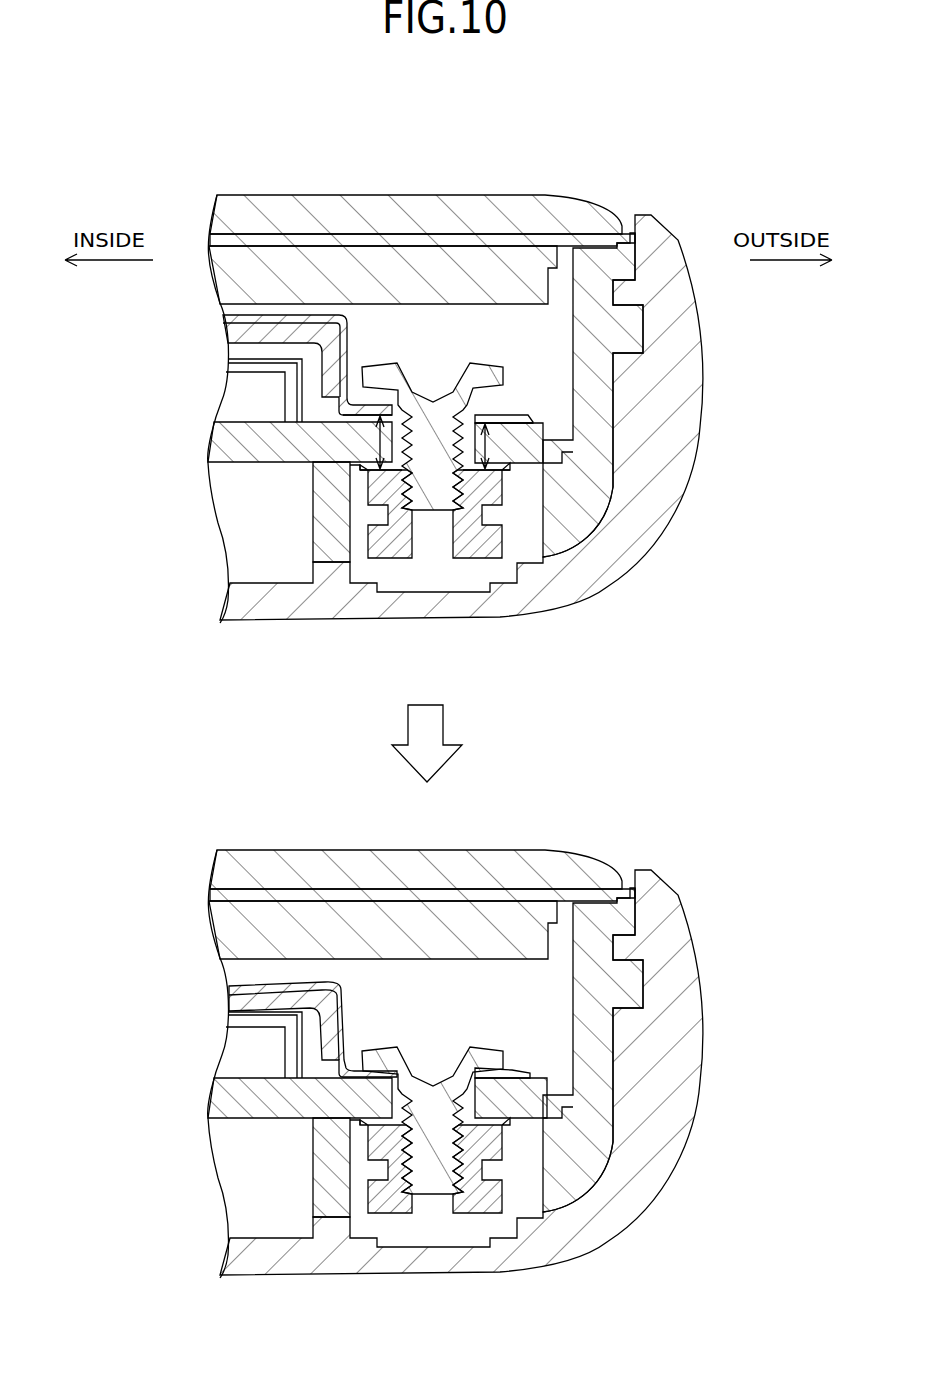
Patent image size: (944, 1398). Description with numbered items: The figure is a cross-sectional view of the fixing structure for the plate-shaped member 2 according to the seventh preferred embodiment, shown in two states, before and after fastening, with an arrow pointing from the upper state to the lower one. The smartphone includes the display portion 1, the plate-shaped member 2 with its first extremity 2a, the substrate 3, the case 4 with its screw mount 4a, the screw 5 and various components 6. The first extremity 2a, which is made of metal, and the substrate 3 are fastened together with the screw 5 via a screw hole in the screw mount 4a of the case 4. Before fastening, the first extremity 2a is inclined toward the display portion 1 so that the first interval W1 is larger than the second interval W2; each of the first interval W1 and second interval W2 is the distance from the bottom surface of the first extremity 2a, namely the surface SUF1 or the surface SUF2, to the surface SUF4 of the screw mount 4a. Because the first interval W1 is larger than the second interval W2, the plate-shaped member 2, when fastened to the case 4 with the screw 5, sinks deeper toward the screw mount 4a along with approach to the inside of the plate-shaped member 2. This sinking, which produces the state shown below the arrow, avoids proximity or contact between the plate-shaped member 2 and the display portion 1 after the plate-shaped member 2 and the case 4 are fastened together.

The display portion 1 is at (500, 265).
The plate-shaped member 2 is at (305, 316).
The first extremity 2a is at (517, 416).
The substrate 3 is at (222, 440).
The case 4 is at (610, 577).
The screw mount 4a is at (500, 498).
The screw 5 is at (383, 365).
The various components 6 is at (247, 381).
The surface SUF1 is at (487, 427).
The surface SUF2 is at (355, 417).
The surface SUF4 is at (502, 470).
The first interval W1 is at (380, 443).
The second interval W2 is at (485, 447).